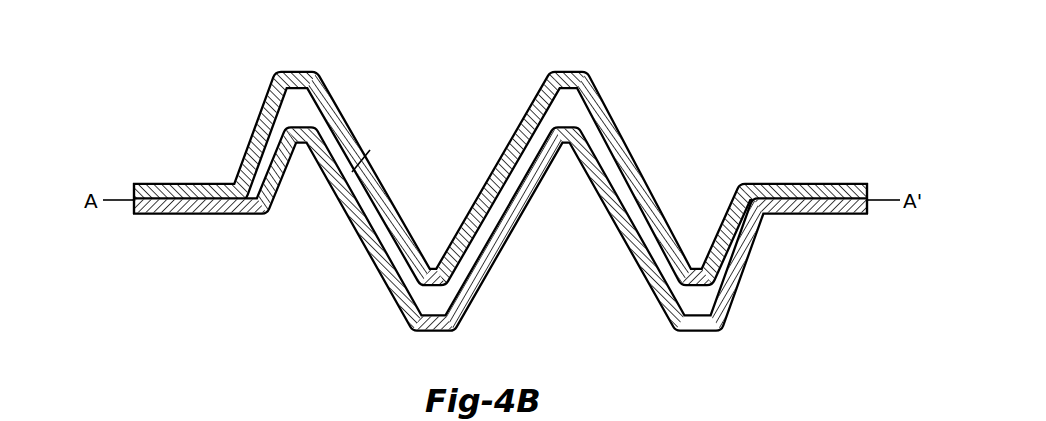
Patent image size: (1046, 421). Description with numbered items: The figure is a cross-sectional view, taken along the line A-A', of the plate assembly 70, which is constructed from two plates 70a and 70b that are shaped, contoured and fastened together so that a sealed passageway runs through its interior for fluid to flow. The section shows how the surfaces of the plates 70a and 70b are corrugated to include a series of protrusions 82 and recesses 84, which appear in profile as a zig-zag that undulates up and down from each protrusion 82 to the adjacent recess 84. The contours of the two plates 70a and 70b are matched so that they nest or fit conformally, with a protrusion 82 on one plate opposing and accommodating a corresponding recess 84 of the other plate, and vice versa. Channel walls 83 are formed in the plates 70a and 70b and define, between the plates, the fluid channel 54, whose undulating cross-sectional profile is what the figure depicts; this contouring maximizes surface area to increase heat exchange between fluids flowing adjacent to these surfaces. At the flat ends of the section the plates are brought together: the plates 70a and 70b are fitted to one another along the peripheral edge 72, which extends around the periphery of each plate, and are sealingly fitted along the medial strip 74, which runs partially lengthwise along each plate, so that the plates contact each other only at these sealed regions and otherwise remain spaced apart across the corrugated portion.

The plate assembly 70 is at (523, 210).
The medial strip 74 is at (182, 183).
The peripheral edge 72 is at (810, 183).
The protrusion 82 is at (355, 84).
The recess 84 is at (435, 246).
The channel wall 83 is at (523, 210).
The fluid channel 54 is at (370, 150).
The plate 70a is at (622, 136).
The plate 70b is at (622, 222).